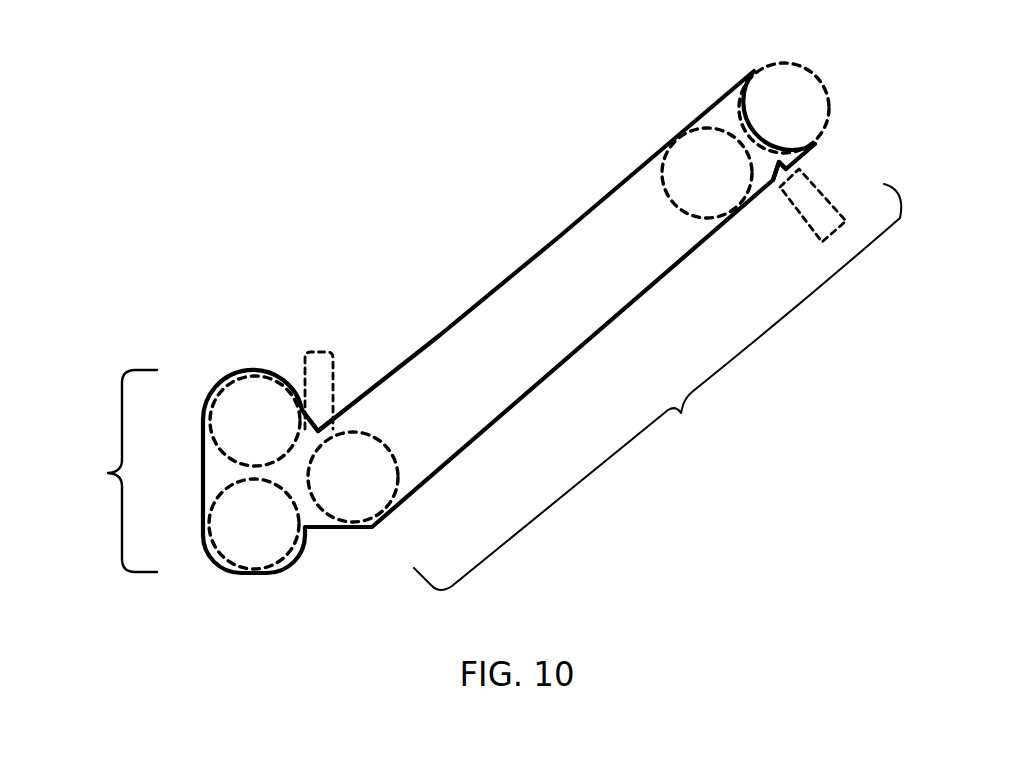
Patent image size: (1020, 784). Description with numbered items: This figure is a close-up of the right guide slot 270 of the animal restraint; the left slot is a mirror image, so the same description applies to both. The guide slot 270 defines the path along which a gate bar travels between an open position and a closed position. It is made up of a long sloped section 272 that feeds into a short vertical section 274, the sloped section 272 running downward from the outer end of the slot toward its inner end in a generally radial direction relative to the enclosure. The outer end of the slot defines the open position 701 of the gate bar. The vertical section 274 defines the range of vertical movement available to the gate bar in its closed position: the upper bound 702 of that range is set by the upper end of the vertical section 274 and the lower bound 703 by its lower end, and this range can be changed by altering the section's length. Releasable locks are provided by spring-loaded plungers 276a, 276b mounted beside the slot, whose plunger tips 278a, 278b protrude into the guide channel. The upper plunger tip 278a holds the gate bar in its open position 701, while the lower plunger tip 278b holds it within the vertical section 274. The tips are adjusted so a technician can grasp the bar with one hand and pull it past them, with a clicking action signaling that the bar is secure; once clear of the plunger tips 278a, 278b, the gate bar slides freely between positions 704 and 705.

The guide slot 270 is at (516, 123).
The open position 701 is at (785, 90).
The upper bound 702 is at (237, 377).
The lower bound 703 is at (235, 550).
The position 704 is at (672, 143).
The position 705 is at (358, 512).
The sloped section 272 is at (657, 387).
The vertical section 274 is at (84, 471).
The spring-loaded plunger 276a is at (818, 192).
The spring-loaded plunger 276b is at (332, 374).
The upper plunger tip 278a is at (779, 172).
The lower plunger tip 278b is at (330, 431).